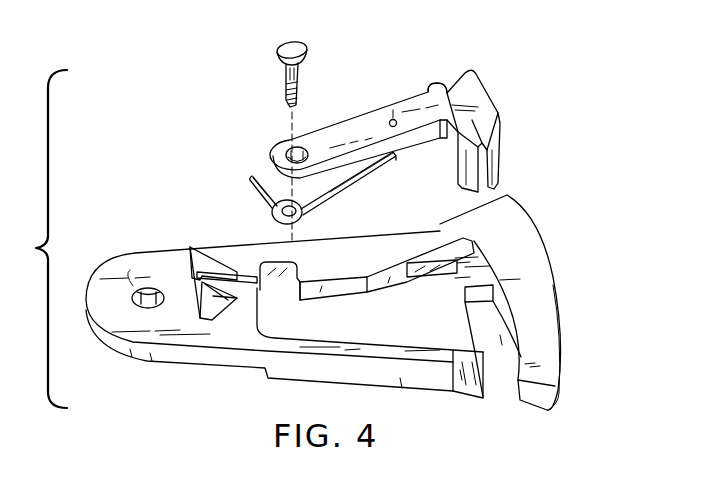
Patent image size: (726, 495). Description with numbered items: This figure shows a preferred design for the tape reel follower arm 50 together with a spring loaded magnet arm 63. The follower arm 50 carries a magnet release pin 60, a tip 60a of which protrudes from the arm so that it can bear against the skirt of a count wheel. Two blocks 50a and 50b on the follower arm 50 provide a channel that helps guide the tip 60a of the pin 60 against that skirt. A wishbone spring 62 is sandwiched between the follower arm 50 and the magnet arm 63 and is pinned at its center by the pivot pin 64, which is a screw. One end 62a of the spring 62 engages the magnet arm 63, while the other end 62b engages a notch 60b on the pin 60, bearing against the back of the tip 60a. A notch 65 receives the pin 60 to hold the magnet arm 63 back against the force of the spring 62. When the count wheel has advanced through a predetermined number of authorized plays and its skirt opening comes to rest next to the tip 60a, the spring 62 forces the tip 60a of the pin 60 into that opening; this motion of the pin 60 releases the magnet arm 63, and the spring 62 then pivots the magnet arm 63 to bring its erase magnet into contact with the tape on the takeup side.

The follower arm 50 is at (537, 268).
The block 50a is at (195, 250).
The block 50b is at (213, 296).
The magnet release pin 60 is at (443, 248).
The tip 60a is at (192, 260).
The notch 60b is at (285, 262).
The wishbone spring 62 is at (347, 192).
The end 62a is at (433, 177).
The end 62b is at (251, 180).
The magnet arm 63 is at (474, 89).
The pivot pin 64 is at (298, 77).
The notch 65 is at (428, 92).